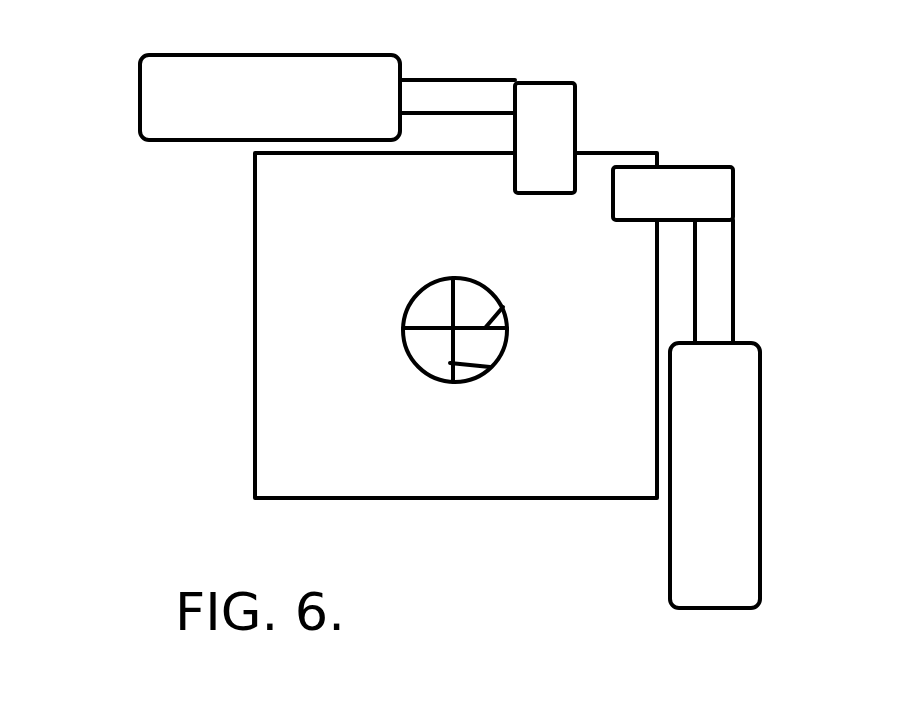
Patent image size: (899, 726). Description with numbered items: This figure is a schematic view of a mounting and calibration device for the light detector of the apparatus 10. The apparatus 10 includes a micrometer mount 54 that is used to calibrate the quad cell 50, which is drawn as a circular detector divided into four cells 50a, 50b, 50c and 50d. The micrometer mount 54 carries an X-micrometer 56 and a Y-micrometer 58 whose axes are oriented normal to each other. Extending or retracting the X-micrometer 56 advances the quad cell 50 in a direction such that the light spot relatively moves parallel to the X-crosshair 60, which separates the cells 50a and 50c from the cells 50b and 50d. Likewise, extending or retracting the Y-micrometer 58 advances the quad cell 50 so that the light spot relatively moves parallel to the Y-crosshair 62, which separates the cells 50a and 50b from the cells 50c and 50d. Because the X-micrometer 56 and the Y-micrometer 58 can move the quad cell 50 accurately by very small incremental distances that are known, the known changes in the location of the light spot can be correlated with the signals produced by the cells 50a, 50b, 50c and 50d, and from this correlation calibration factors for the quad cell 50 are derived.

The apparatus 10 is at (740, 108).
The micrometer mount 54 is at (132, 167).
The X-micrometer 56 is at (145, 88).
The Y-micrometer 58 is at (745, 488).
The quad cell 50 is at (449, 279).
The cell 50a is at (426, 300).
The cell 50b is at (481, 294).
The cell 50c is at (426, 358).
The cell 50d is at (488, 347).
The X-crosshair 60 is at (490, 367).
The Y-crosshair 62 is at (503, 307).